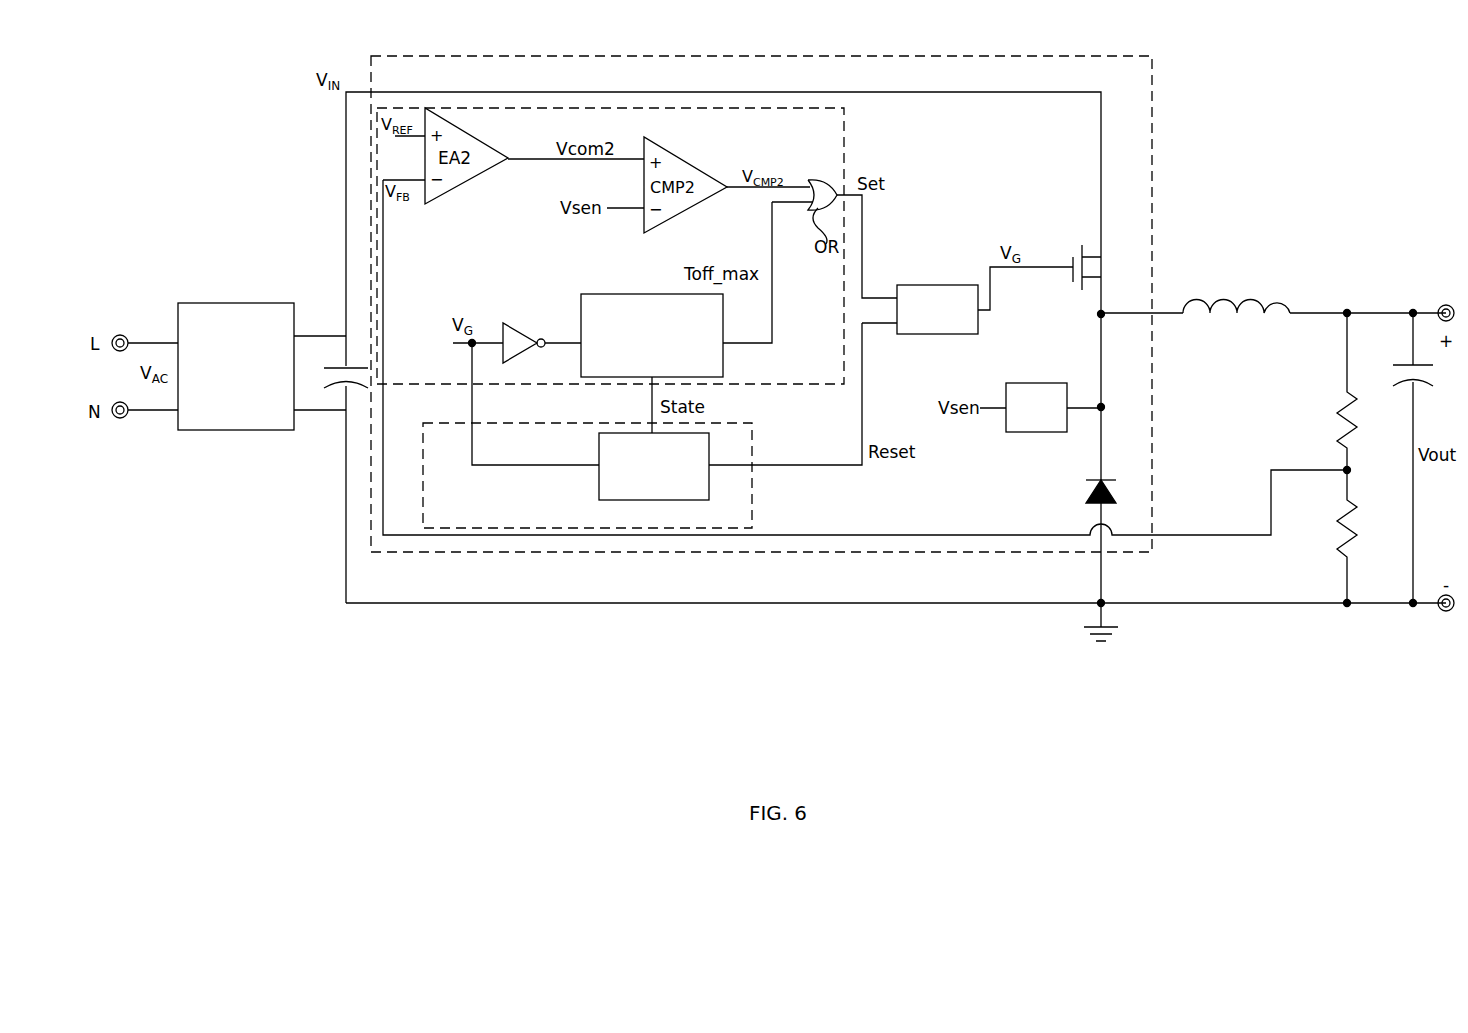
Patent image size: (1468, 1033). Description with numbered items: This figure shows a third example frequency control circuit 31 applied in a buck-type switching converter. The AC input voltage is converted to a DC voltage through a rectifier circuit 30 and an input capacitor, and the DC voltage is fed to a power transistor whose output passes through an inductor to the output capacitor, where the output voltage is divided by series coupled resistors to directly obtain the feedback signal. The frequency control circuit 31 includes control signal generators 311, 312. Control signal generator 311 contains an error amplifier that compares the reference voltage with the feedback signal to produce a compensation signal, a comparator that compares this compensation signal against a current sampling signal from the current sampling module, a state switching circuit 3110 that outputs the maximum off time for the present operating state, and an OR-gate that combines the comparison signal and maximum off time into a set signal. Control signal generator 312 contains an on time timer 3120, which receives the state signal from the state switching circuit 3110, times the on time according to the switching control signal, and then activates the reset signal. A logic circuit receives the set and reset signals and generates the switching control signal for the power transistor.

The rectifier circuit 30 is at (233, 430).
The frequency control circuit 31 is at (945, 552).
The control signal generator 311 is at (610, 246).
The control signal generator 312 is at (587, 475).
The state switching circuit 3110 is at (652, 335).
The on time timer 3120 is at (654, 466).